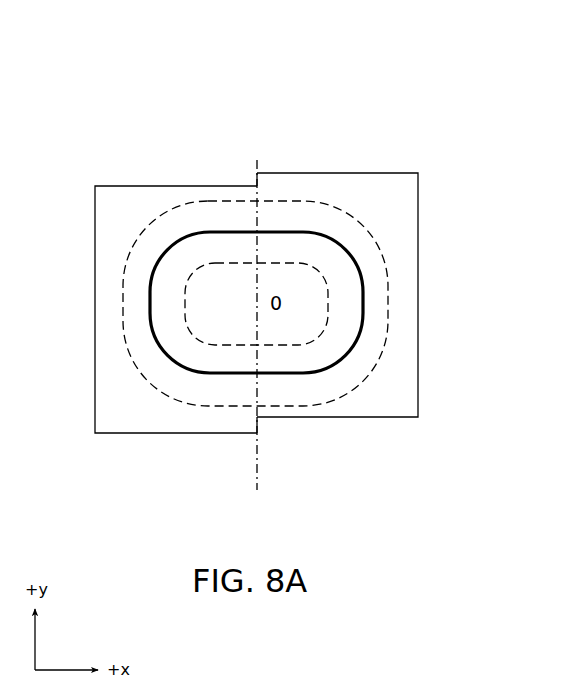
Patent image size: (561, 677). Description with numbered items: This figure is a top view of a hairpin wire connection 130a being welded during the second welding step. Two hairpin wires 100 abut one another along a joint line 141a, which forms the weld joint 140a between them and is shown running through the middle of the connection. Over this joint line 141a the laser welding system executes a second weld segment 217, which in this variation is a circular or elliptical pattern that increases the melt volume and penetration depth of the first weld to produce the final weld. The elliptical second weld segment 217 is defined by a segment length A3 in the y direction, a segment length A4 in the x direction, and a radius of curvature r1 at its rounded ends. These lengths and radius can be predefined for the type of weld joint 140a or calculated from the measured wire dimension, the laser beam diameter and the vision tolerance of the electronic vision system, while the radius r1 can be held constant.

The hairpin wire 100 is at (249, 224).
The hairpin wire connection 130a is at (305, 53).
The weld joint 140a is at (220, 92).
The joint line 141a is at (257, 160).
The second weld segment 217 is at (148, 300).
The radius r1 is at (176, 246).
The segment length A3 is at (425, 235).
The segment length A4 is at (361, 440).